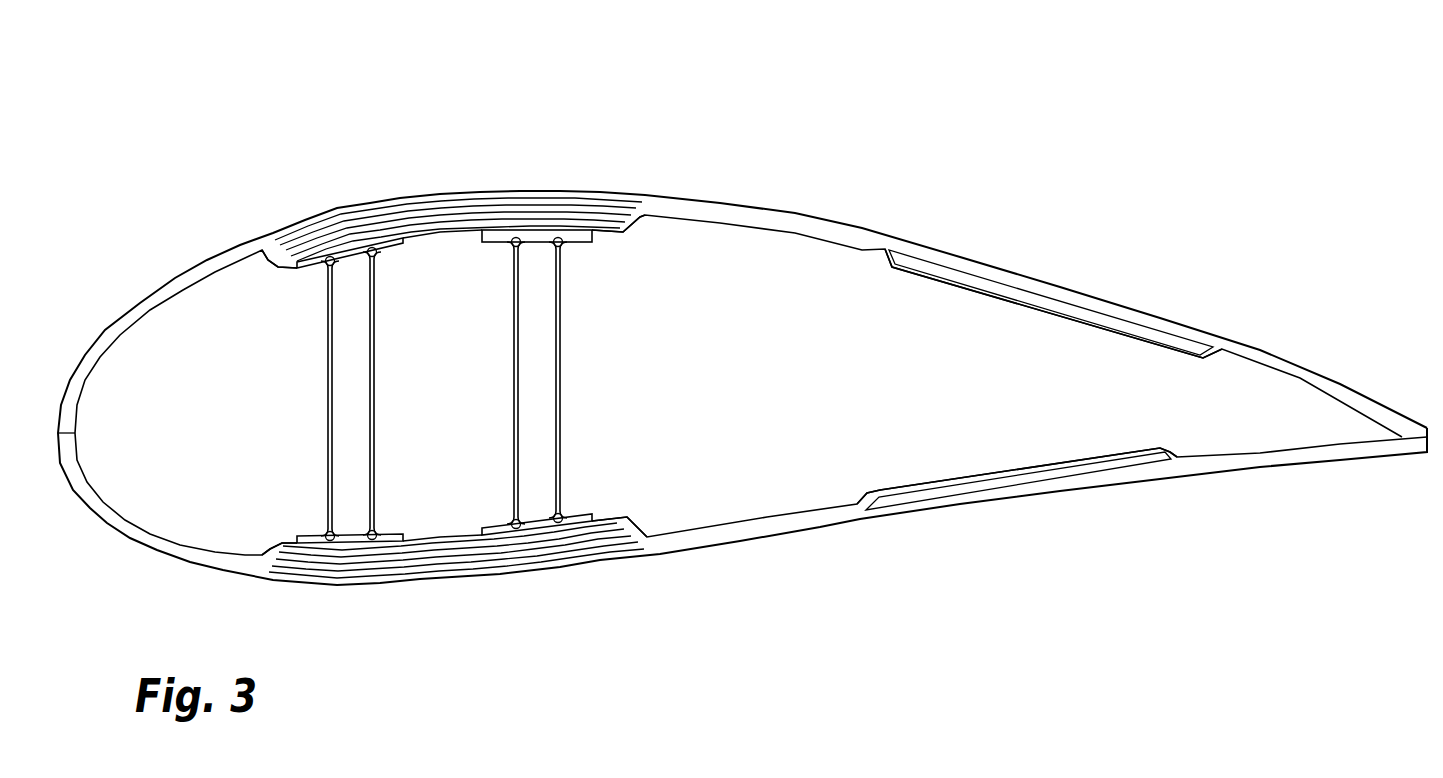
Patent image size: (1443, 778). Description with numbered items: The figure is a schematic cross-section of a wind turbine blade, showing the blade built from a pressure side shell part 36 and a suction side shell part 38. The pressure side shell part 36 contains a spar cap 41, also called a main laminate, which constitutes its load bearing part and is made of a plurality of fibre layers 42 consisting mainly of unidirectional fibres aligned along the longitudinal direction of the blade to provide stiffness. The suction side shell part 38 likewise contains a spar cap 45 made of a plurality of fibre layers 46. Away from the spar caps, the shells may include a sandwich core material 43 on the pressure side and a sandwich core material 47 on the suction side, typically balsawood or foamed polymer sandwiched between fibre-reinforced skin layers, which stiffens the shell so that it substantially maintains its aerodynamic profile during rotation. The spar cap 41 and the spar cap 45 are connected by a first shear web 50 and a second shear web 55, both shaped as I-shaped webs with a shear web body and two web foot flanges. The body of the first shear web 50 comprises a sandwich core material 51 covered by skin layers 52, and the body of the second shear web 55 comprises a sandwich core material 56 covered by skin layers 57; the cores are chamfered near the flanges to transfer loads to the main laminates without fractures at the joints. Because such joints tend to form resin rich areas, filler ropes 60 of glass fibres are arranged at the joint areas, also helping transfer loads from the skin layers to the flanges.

The pressure side shell part 36 is at (822, 534).
The suction side shell part 38 is at (795, 213).
The spar cap 41 is at (573, 560).
The fibre layers 42 is at (447, 555).
The sandwich core material 43 is at (1041, 482).
The spar cap 45 is at (402, 200).
The fibre layers 46 is at (555, 222).
The sandwich core material 47 is at (1037, 290).
The first shear web 50 is at (377, 390).
The sandwich core material 51 is at (364, 425).
The skin layers 52 is at (374, 312).
The second shear web 55 is at (576, 382).
The sandwich core material 56 is at (548, 418).
The skin layers 57 is at (562, 338).
The filler ropes 60 is at (508, 246).